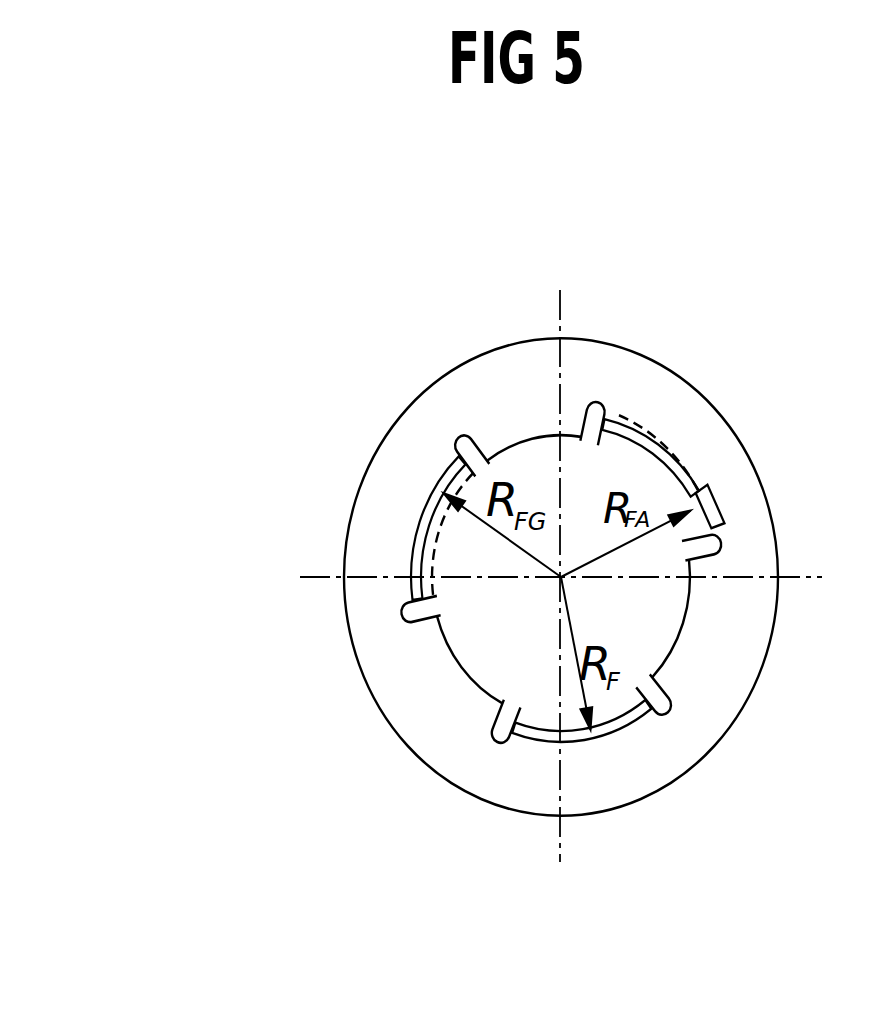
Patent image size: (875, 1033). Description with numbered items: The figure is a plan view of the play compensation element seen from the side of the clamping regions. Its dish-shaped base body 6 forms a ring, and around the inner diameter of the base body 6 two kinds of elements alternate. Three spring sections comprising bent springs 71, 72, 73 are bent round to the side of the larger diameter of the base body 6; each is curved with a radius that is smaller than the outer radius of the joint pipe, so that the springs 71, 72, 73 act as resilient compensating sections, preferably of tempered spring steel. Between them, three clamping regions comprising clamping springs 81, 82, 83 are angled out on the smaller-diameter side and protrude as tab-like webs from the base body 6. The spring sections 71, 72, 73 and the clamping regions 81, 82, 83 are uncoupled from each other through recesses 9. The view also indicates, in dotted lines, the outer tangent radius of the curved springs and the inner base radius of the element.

The base body 6 is at (700, 420).
The recesses 9 is at (722, 543).
The bent spring 71 is at (417, 515).
The bent spring 72 is at (608, 728).
The bent spring 73 is at (697, 493).
The clamping spring 81 is at (463, 672).
The clamping spring 82 is at (680, 633).
The clamping spring 83 is at (513, 443).